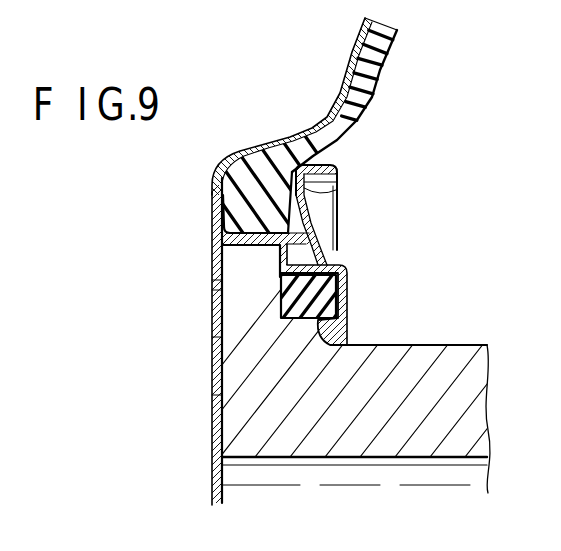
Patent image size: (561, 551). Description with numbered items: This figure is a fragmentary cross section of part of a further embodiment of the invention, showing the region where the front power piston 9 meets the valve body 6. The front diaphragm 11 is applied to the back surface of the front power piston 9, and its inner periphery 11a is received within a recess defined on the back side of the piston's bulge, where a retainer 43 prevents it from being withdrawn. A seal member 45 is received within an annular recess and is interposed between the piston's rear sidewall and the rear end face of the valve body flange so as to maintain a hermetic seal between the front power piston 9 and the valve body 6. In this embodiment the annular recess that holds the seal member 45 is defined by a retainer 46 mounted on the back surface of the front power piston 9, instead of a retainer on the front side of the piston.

The valve body 6 is at (440, 336).
The front power piston 9 is at (297, 118).
The front diaphragm 11 is at (375, 88).
The inner periphery 11a is at (247, 175).
The retainer 43 is at (337, 193).
The seal member 45 is at (346, 293).
The retainer 46 is at (213, 242).